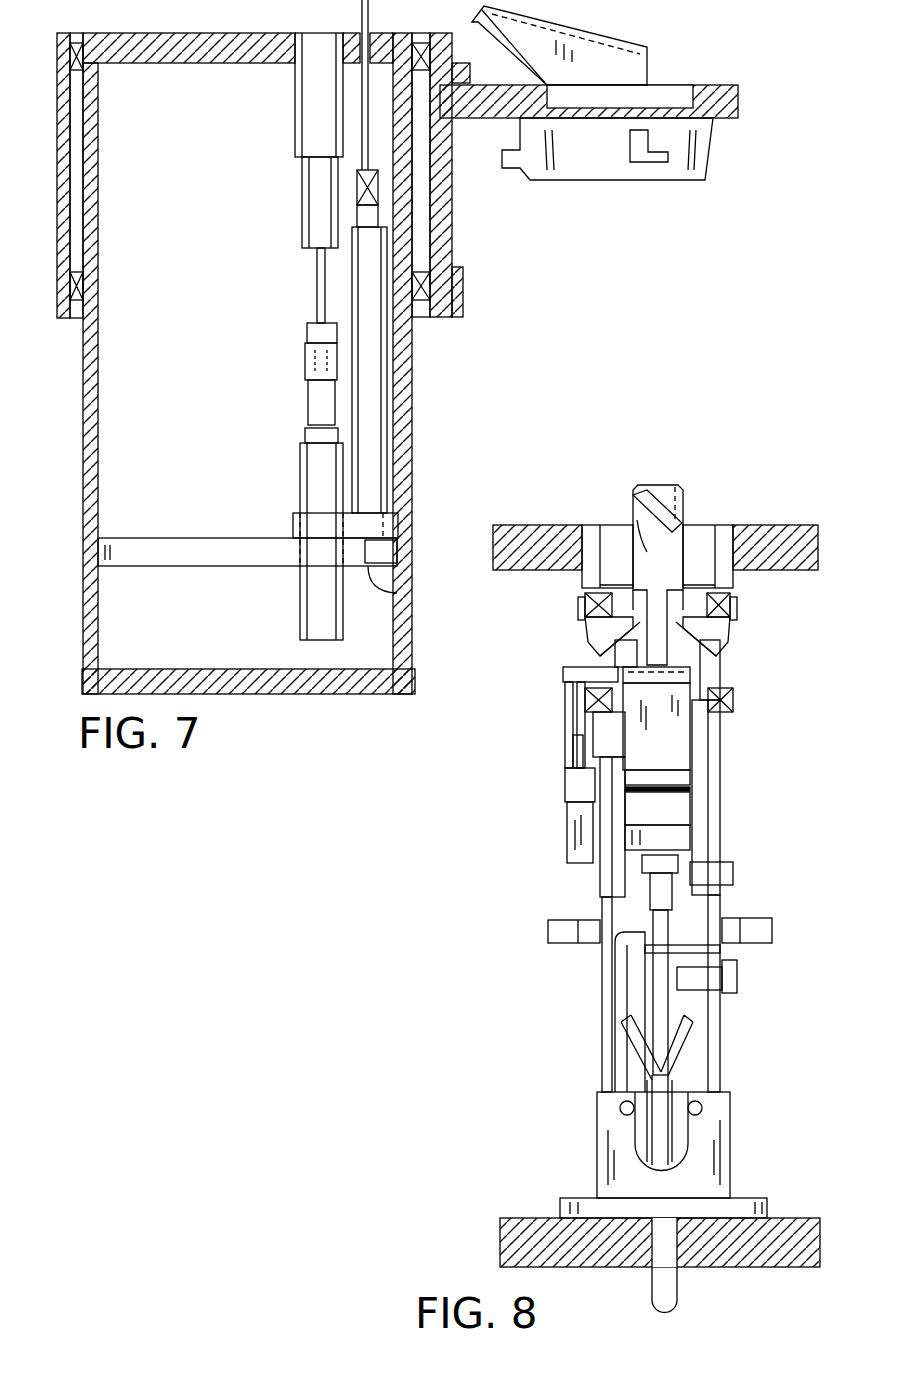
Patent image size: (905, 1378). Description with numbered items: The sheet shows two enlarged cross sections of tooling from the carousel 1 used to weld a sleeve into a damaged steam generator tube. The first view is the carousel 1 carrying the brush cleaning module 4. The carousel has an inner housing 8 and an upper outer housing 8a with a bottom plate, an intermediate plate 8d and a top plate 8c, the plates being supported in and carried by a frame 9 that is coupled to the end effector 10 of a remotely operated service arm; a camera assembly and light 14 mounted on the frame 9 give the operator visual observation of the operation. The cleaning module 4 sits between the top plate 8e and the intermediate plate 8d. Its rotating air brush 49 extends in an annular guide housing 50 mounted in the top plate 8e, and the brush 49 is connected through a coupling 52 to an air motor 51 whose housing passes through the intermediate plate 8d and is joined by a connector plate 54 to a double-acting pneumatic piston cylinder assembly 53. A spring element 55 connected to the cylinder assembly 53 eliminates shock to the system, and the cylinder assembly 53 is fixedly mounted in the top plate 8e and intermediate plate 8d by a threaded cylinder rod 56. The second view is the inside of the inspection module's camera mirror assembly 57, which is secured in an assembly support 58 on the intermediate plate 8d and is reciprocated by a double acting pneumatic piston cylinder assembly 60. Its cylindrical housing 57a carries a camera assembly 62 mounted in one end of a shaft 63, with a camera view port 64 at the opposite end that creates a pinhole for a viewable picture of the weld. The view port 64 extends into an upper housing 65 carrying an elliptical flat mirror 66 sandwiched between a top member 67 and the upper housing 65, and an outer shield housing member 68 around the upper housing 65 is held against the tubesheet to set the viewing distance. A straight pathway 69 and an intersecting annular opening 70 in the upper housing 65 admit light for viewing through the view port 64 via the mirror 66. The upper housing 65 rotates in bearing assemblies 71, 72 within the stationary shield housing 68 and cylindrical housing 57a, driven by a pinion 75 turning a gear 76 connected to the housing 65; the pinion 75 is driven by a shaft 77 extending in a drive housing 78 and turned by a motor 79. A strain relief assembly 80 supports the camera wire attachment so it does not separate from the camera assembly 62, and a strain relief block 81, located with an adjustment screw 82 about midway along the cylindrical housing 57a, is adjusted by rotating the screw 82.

In FIG. 7, the carousel 1 is at (424, 434).
In FIG. 7, the cleaning module 4 is at (288, 460).
In FIG. 7, the inner housing 8 is at (256, 349).
In FIG. 7, the upper outer housing 8a is at (60, 190).
In FIG. 7, the top plate 8c is at (216, 670).
In FIG. 7, the intermediate plate 8d is at (205, 545).
In FIG. 8, the intermediate plate 8d is at (790, 1222).
In FIG. 7, the top plate 8e is at (268, 33).
In FIG. 8, the top plate 8e is at (812, 541).
In FIG. 7, the frame 9 is at (712, 85).
In FIG. 7, the end effector 10 is at (708, 150).
In FIG. 7, the camera assembly and light 14 is at (588, 19).
In FIG. 7, the rotating air brush 49 is at (308, 200).
In FIG. 7, the annular guide housing 50 is at (300, 115).
In FIG. 7, the air motor 51 is at (303, 618).
In FIG. 7, the coupling 52 is at (312, 398).
In FIG. 7, the double-acting pneumatic piston cylinder assembly 53 is at (378, 343).
In FIG. 7, the connector plate 54 is at (375, 525).
In FIG. 7, the spring element 55 is at (378, 184).
In FIG. 7, the threaded cylinder rod 56 is at (377, 60).
In FIG. 8, the camera mirror assembly 57 is at (766, 950).
In FIG. 8, the cylindrical housing 57a is at (608, 1040).
In FIG. 8, the assembly support 58 is at (752, 1196).
In FIG. 8, the double acting pneumatic piston cylinder assembly 60 is at (767, 930).
In FIG. 8, the camera assembly 62 is at (680, 843).
In FIG. 8, the shaft 63 is at (690, 790).
In FIG. 8, the camera view port 64 is at (680, 645).
In FIG. 8, the upper housing 65 is at (697, 533).
In FIG. 8, the elliptical flat mirror 66 is at (650, 490).
In FIG. 8, the top member 67 is at (680, 490).
In FIG. 8, the outer shield housing member 68 is at (737, 552).
In FIG. 8, the straight pathway 69 is at (636, 520).
In FIG. 8, the annular opening 70 is at (592, 641).
In FIG. 8, the bearing assembly 71 is at (732, 606).
In FIG. 8, the bearing assembly 72 is at (737, 698).
In FIG. 8, the pinion 75 is at (565, 678).
In FIG. 8, the gear 76 is at (700, 672).
In FIG. 8, the shaft 77 is at (570, 722).
In FIG. 8, the drive housing 78 is at (568, 745).
In FIG. 8, the motor 79 is at (567, 833).
In FIG. 8, the strain relief assembly 80 is at (690, 1052).
In FIG. 8, the strain relief block 81 is at (620, 980).
In FIG. 8, the adjustment screw 82 is at (738, 975).